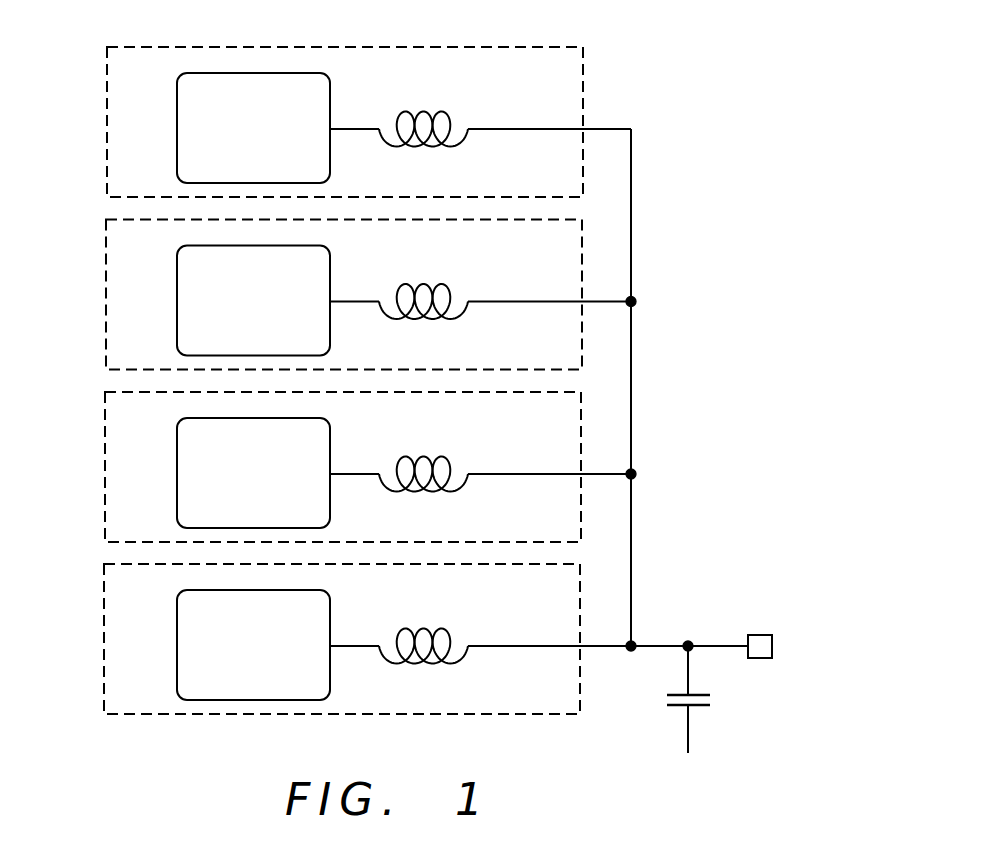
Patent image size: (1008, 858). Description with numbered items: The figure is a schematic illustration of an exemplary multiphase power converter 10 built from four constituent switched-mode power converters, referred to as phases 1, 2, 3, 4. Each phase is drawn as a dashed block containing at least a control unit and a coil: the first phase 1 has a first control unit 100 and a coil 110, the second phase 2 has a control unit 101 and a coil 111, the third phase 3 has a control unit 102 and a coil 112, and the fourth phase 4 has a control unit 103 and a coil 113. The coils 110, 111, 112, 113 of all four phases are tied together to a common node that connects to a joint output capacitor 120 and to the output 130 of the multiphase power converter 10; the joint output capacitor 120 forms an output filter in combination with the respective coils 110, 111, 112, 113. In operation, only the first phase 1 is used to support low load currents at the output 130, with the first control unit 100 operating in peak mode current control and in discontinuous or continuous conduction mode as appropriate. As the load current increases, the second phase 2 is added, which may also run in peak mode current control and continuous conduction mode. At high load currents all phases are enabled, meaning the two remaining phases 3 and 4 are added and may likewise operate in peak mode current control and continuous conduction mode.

The multiphase power converter 10 is at (641, 52).
The first phase 1 is at (314, 638).
The second phase 2 is at (314, 466).
The third phase 3 is at (316, 294).
The fourth phase 4 is at (107, 73).
The first control unit 100 is at (231, 642).
The control unit 101 is at (231, 470).
The control unit 102 is at (231, 298).
The control unit 103 is at (177, 123).
The coil 110 is at (438, 618).
The coil 111 is at (438, 446).
The coil 112 is at (438, 274).
The coil 113 is at (457, 127).
The joint output capacitor 120 is at (667, 711).
The output 130 is at (760, 635).